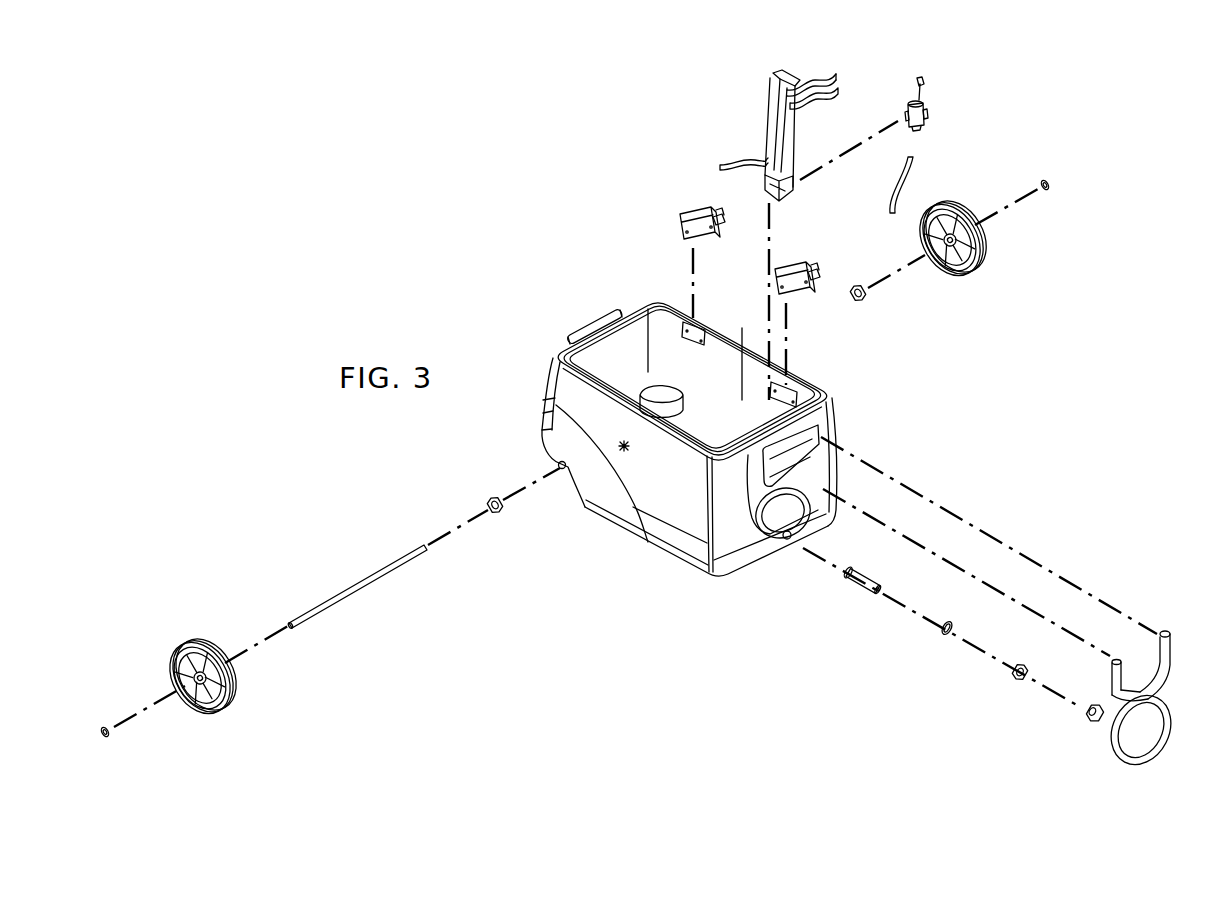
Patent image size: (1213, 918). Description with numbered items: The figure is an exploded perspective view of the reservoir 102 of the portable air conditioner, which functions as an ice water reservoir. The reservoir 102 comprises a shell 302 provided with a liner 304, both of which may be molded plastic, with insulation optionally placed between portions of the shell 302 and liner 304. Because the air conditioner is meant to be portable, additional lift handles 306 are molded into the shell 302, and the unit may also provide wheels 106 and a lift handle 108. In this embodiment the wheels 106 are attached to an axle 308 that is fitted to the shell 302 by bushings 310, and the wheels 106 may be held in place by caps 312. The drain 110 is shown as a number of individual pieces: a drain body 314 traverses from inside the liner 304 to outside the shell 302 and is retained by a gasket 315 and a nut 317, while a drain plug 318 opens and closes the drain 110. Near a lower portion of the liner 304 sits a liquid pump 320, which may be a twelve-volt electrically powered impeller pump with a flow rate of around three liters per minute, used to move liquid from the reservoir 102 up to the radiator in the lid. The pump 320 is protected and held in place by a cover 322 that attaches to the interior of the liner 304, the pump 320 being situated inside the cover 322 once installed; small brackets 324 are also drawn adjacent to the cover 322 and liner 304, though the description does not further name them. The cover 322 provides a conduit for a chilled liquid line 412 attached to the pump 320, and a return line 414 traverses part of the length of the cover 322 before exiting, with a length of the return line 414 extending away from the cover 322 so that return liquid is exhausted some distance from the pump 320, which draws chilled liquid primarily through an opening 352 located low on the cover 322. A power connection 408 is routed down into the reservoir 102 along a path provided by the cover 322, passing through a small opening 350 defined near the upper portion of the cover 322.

The reservoir 102 is at (530, 390).
The wheels 106 is at (186, 650).
The lift handle 108 is at (1168, 744).
The drain 110 is at (824, 681).
The shell 302 is at (837, 428).
The liner 304 is at (745, 336).
The lift handles 306 is at (592, 326).
The axle 308 is at (356, 582).
The bushings 310 is at (489, 502).
The caps 312 is at (110, 738).
The drain body 314 is at (853, 586).
The gasket 315 is at (942, 639).
The nut 317 is at (1014, 680).
The drain plug 318 is at (1089, 722).
The liquid pump 320 is at (926, 110).
The cover 322 is at (768, 107).
The bracket 324 is at (679, 217).
The small opening 350 is at (784, 73).
The opening 352 is at (766, 186).
The power connection 408 is at (916, 170).
The chilled liquid line 412 is at (818, 103).
The return line 414 is at (840, 72).